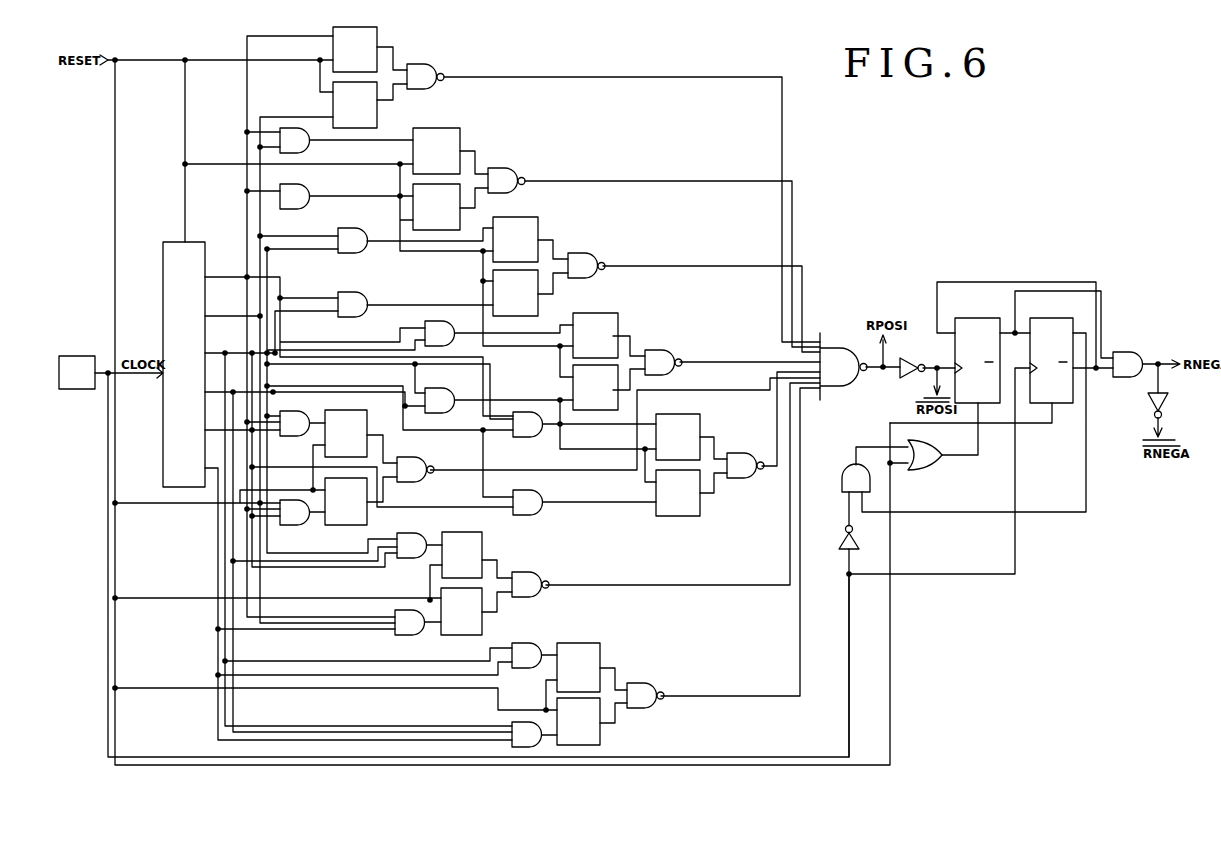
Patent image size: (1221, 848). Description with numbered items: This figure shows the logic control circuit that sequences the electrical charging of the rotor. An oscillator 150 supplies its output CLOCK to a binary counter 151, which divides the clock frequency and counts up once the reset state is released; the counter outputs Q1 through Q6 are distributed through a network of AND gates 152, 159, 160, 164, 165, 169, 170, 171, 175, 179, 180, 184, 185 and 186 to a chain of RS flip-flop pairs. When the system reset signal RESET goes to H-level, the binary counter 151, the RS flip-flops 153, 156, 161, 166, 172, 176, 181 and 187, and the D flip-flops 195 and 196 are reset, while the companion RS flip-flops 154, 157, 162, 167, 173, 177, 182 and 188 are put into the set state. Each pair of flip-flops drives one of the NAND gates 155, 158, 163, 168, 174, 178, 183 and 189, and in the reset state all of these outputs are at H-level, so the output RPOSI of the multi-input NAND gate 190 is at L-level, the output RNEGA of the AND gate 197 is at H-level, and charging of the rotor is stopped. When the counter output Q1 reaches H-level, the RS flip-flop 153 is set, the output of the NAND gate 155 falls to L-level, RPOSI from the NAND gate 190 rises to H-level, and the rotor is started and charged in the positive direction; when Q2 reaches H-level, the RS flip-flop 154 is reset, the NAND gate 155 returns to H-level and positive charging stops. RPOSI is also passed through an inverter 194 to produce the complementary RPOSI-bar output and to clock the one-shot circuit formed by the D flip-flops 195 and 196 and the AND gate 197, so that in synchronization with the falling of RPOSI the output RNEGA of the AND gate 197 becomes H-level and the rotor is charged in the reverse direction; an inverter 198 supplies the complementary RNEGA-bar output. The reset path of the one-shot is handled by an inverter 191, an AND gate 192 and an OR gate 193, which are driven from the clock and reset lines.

The oscillator 150 is at (80, 356).
The binary counter 151 is at (163, 258).
The AND gate 152 is at (305, 150).
The RS flip-flop 153 is at (378, 36).
The RS flip-flop 154 is at (377, 124).
The NAND gate 155 is at (426, 64).
The RS flip-flop 156 is at (440, 128).
The RS flip-flop 157 is at (460, 216).
The NAND gate 158 is at (506, 168).
The AND gate 159 is at (308, 188).
The AND gate 160 is at (368, 222).
The RS flip-flop 161 is at (538, 222).
The RS flip-flop 162 is at (538, 306).
The NAND gate 163 is at (592, 253).
The AND gate 164 is at (370, 285).
The AND gate 165 is at (450, 324).
The RS flip-flop 166 is at (618, 326).
The RS flip-flop 167 is at (573, 390).
The NAND gate 168 is at (676, 351).
The AND gate 169 is at (450, 390).
The AND gate 170 is at (526, 438).
The AND gate 171 is at (300, 436).
The RS flip-flop 172 is at (367, 412).
The RS flip-flop 173 is at (367, 522).
The NAND gate 174 is at (424, 458).
The AND gate 175 is at (540, 491).
The RS flip-flop 176 is at (700, 418).
The RS flip-flop 177 is at (700, 514).
The NAND gate 178 is at (752, 453).
The AND gate 179 is at (306, 526).
The AND gate 180 is at (412, 559).
The RS flip-flop 181 is at (482, 538).
The RS flip-flop 182 is at (482, 626).
The NAND gate 183 is at (534, 572).
The AND gate 184 is at (420, 636).
The AND gate 185 is at (536, 644).
The AND gate 186 is at (512, 726).
The RS flip-flop 187 is at (600, 645).
The RS flip-flop 188 is at (600, 742).
The NAND gate 189 is at (651, 683).
The NAND gate 190 is at (838, 348).
The inverter 191 is at (839, 556).
The AND gate 192 is at (842, 482).
The OR gate 193 is at (934, 468).
The inverter 194 is at (910, 358).
The D flip-flop 195 is at (980, 318).
The D flip-flop 196 is at (1052, 404).
The AND gate 197 is at (1132, 352).
The inverter 198 is at (1168, 398).